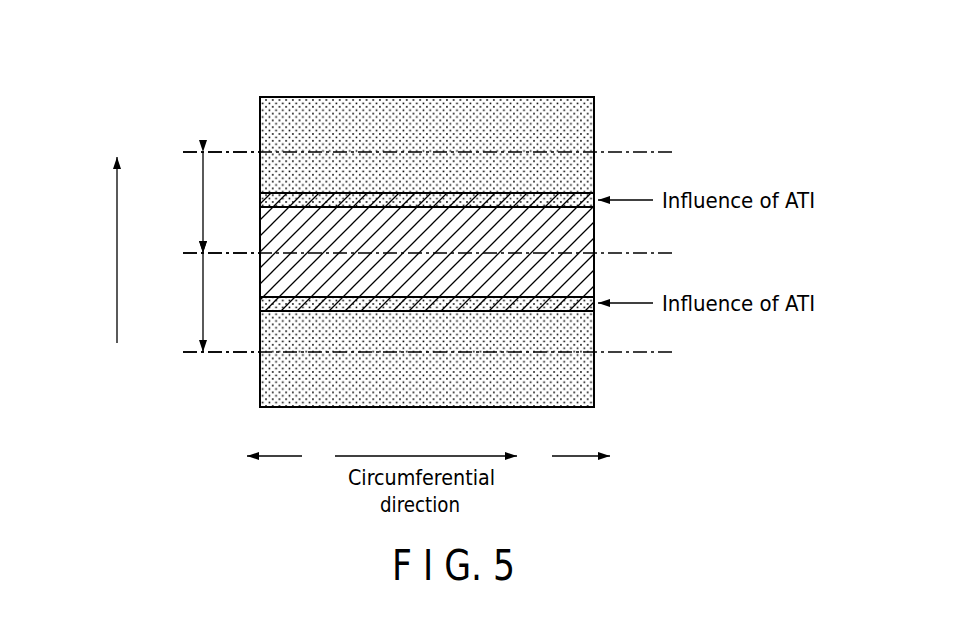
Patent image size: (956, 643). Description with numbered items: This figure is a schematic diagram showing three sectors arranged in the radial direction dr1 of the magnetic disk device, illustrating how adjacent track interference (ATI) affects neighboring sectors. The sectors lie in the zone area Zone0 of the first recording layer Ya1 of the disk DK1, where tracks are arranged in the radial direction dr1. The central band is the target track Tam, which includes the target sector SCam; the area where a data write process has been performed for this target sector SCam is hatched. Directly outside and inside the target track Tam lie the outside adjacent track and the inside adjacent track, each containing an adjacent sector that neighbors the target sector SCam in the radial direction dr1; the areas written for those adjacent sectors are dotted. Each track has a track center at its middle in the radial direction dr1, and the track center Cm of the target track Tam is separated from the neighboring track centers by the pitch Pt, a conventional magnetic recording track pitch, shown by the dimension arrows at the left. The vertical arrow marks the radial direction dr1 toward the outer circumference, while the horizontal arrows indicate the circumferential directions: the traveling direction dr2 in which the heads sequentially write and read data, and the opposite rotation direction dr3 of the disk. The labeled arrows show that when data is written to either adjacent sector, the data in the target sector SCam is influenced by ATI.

The disk DK1 is at (360, 95).
The first recording layer Ya1 is at (427, 211).
The zone area Zone0 is at (485, 95).
The target sector SCam is at (597, 232).
The target track Tam is at (459, 235).
The track center Cm is at (233, 251).
The pitch Pt is at (197, 200).
The radial direction dr1 is at (112, 258).
The traveling direction dr2 is at (581, 473).
The rotation direction dr3 is at (274, 473).